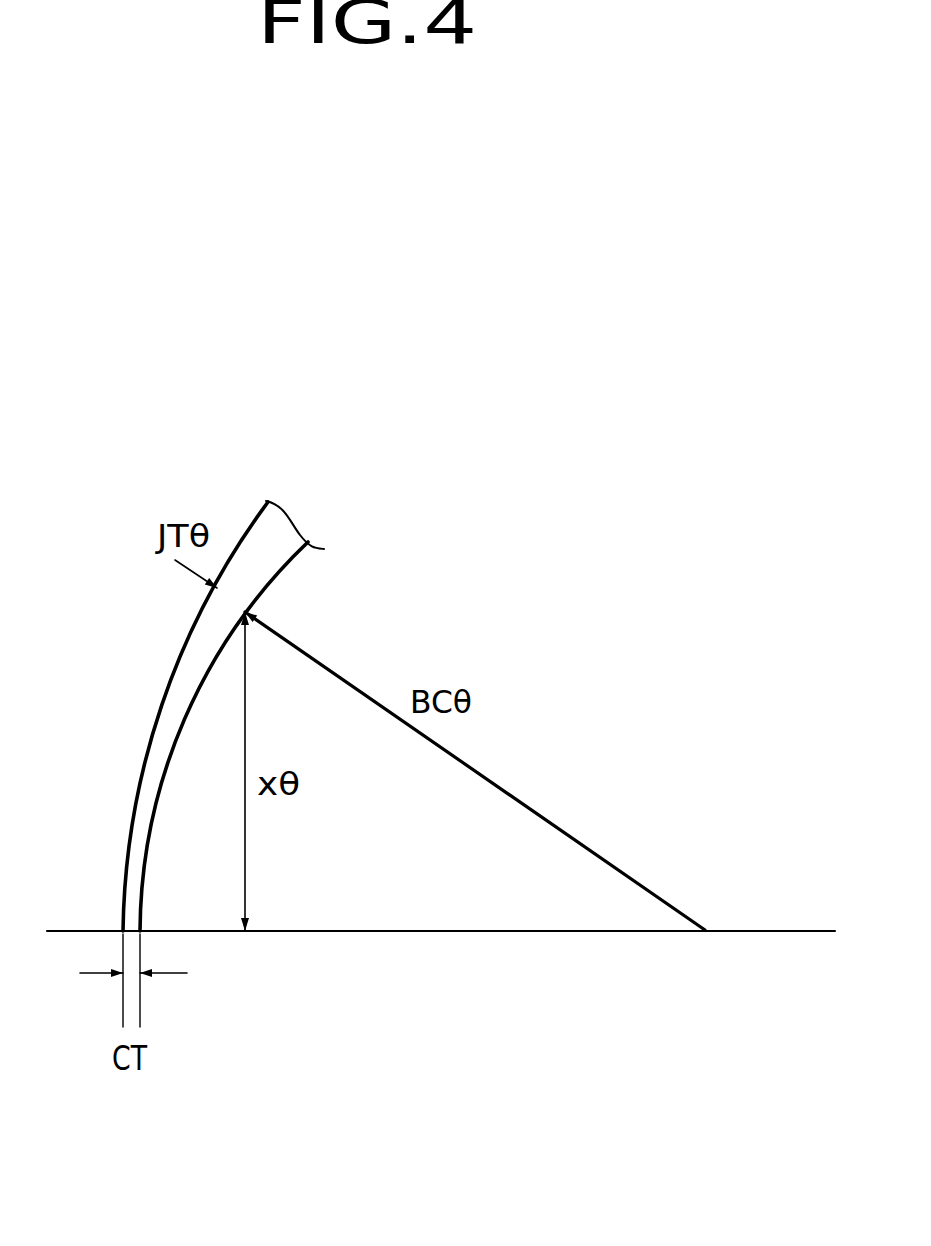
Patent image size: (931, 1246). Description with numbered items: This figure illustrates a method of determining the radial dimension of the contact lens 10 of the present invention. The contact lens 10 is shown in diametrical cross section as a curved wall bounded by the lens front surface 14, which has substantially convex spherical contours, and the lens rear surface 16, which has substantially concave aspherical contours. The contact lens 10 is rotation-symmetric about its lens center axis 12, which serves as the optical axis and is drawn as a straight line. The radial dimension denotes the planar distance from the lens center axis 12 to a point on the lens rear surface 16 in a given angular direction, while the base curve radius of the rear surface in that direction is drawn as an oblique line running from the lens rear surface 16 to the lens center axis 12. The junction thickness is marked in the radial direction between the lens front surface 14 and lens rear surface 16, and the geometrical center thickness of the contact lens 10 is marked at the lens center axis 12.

The contact lens 10 is at (266, 681).
The lens center axis 12 is at (448, 932).
The lens front surface 14 is at (173, 672).
The lens rear surface 16 is at (155, 810).